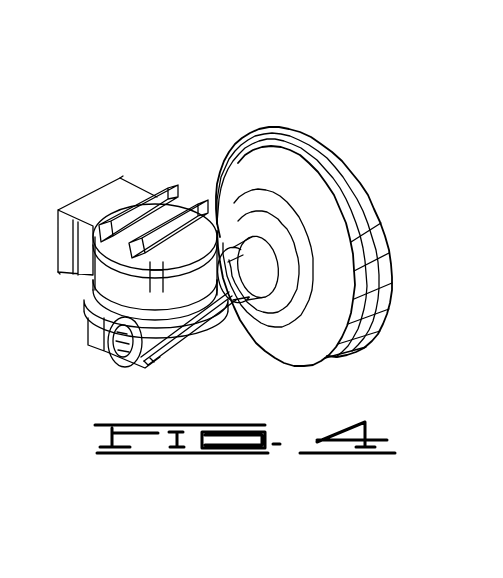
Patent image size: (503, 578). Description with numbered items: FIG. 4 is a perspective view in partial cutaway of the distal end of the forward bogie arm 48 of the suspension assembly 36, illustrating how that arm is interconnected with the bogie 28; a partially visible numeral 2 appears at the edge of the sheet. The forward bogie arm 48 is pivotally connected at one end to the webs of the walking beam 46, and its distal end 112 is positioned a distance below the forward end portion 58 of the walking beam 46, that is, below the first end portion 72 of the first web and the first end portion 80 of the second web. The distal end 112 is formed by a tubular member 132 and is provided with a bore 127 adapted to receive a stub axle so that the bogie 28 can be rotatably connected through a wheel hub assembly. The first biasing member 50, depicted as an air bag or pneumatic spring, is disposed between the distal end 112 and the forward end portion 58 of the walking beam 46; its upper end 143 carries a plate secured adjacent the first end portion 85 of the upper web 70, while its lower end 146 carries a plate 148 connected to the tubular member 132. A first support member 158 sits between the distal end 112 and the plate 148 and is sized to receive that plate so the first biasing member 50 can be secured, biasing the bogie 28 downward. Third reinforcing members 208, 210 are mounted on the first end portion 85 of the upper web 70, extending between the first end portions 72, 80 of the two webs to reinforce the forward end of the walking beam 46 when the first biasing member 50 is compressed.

The steering assembly (partial) 2 is at (3, 235).
The bogie 28 is at (213, 228).
The suspension assembly 36 is at (118, 233).
The walking beam 46 is at (110, 195).
The forward bogie arm 48 is at (80, 323).
The first biasing member 50 is at (216, 207).
The forward end portion 58 is at (214, 222).
The upper web 70 is at (56, 214).
The first end portion 72 is at (296, 150).
The first end portion 80 is at (100, 308).
The first end portion 85 is at (123, 176).
The distal end 112 is at (162, 372).
The bore 127 is at (118, 350).
The tubular member 132 is at (152, 366).
The upper end 143 is at (60, 236).
The lower end 146 is at (263, 340).
The plate 148 is at (172, 318).
The first support member 158 is at (160, 340).
The third reinforcing member 208 is at (177, 258).
The third reinforcing member 210 is at (96, 195).